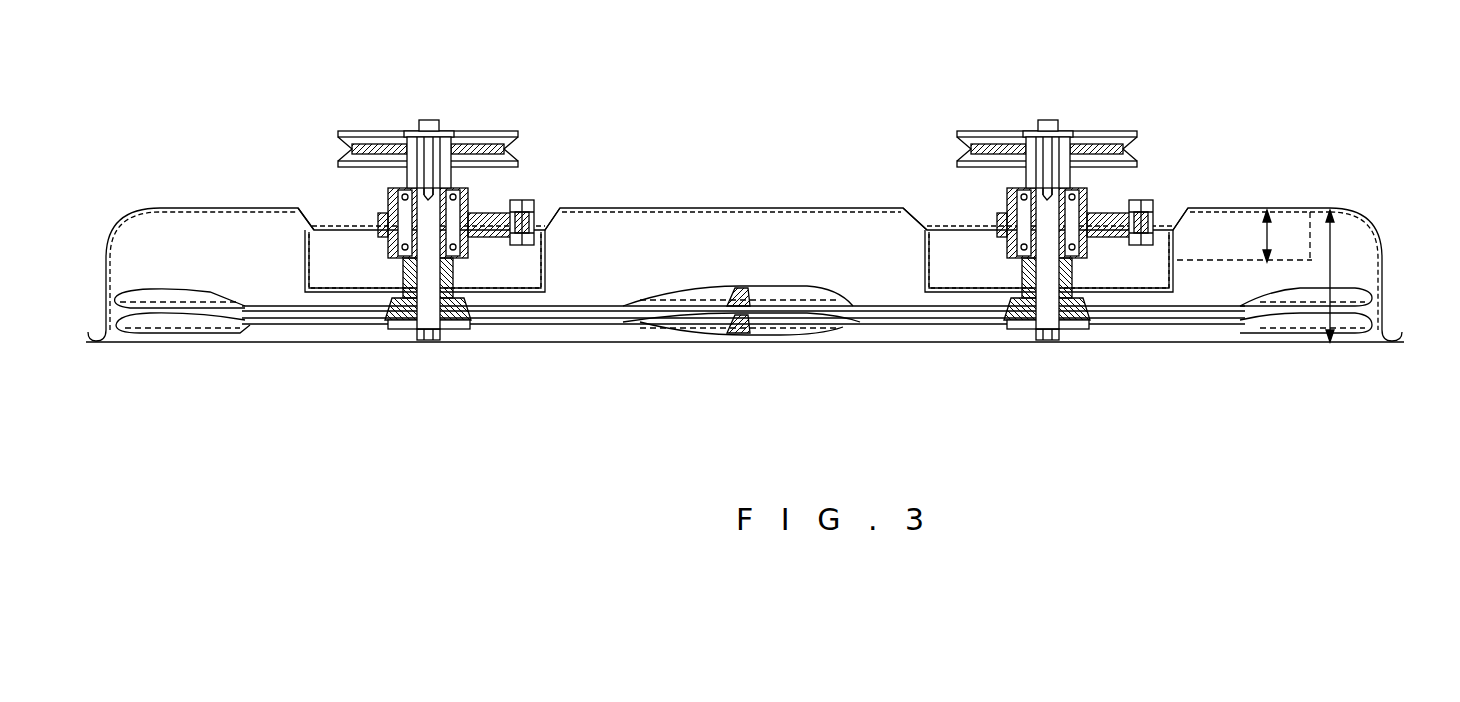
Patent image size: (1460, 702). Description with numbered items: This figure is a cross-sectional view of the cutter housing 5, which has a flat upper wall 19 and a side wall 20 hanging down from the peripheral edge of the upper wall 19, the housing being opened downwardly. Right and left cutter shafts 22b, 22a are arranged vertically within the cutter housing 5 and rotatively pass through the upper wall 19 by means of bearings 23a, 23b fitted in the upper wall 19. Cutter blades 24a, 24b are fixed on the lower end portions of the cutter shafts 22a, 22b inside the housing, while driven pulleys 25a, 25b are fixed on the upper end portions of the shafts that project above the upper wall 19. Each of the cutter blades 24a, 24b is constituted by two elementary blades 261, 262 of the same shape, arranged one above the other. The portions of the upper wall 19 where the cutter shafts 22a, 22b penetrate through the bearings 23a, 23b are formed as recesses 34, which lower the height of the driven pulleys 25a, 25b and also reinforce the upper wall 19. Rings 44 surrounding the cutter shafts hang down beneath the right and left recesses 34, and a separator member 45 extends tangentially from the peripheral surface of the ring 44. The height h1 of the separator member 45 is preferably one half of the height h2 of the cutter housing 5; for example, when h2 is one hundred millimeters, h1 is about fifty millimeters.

The cutter housing 5 is at (1300, 192).
The upper wall 19 is at (824, 210).
The side wall 20 is at (1383, 270).
The cutter shaft 22a is at (1045, 310).
The cutter shaft 22b is at (426, 316).
The bearing 23a is at (1090, 200).
The bearing 23b is at (468, 200).
The cutter blade 24a is at (1169, 323).
The cutter blade 24b is at (336, 323).
The driven pulley 25a is at (1098, 128).
The driven pulley 25b is at (498, 132).
The elementary blade 261 is at (262, 306).
The elementary blade 262 is at (262, 326).
The recess 34 is at (334, 227).
The ring 44 is at (548, 266).
The separator member 45 is at (1238, 226).
The height of the separator member h1 is at (1281, 236).
The height of the cutter housing h2 is at (1334, 276).